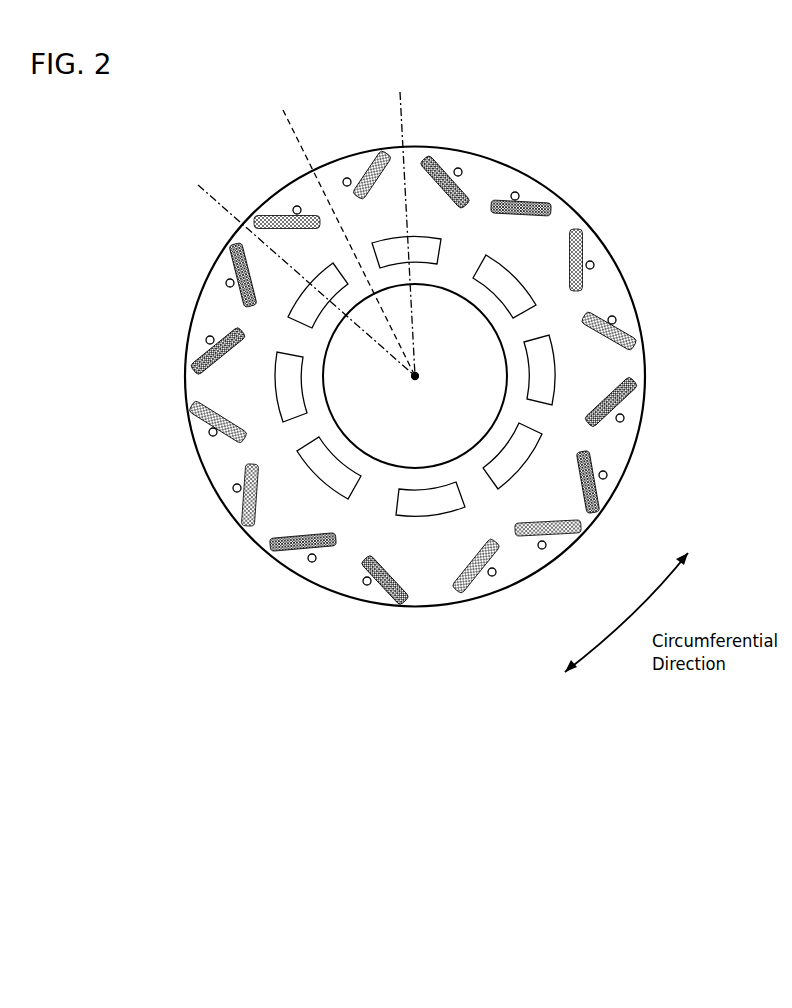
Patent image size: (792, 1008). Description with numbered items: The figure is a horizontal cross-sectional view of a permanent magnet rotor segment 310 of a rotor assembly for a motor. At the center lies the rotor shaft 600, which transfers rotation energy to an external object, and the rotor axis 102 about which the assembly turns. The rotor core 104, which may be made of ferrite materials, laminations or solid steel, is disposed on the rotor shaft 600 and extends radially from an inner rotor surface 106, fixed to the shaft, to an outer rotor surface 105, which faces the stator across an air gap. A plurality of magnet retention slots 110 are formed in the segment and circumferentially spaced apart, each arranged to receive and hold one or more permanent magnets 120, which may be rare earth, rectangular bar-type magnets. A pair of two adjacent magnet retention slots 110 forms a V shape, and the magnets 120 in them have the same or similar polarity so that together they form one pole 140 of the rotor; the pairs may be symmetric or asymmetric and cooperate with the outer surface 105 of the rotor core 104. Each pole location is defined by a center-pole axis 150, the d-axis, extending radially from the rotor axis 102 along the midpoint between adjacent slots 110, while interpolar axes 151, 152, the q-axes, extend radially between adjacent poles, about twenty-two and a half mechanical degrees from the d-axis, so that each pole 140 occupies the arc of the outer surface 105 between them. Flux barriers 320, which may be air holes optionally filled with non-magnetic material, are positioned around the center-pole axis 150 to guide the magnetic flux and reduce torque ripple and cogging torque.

The rotor axis 102 is at (413, 378).
The rotor core 104 is at (458, 265).
The outer rotor surface 105 is at (645, 349).
The inner rotor surface 106 is at (496, 342).
The magnet retention slot 110 is at (442, 167).
The permanent magnet 120 is at (569, 256).
The pole 140 is at (260, 333).
The center-pole axis 150 is at (337, 233).
The interpolar axis 151 is at (297, 270).
The interpolar axis 152 is at (398, 224).
The permanent magnet rotor segment 310 is at (157, 322).
The flux barrier 320 is at (295, 206).
The rotor shaft 600 is at (410, 441).